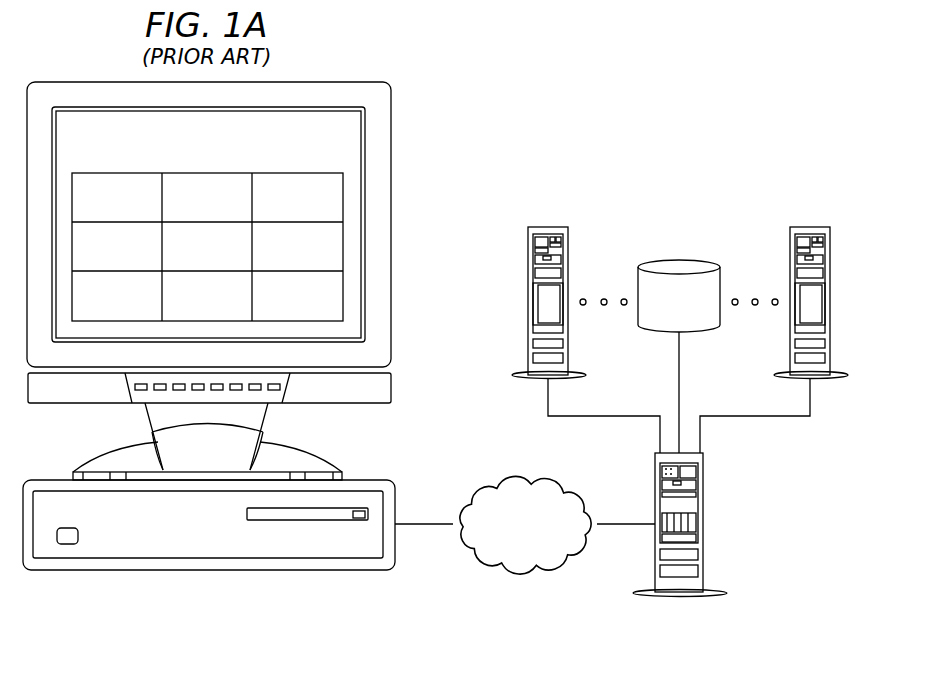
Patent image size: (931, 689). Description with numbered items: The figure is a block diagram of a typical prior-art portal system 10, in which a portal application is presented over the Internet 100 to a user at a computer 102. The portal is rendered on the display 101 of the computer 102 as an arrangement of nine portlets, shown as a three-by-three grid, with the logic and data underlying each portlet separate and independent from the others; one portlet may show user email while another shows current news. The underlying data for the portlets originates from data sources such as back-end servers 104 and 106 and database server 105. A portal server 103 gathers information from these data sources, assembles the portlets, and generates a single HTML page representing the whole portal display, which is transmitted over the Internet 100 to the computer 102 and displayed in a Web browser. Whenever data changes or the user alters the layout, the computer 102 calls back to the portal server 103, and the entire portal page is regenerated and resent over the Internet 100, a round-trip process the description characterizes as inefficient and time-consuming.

The portal system 10 is at (650, 131).
The Internet 100 is at (553, 573).
The display 101 is at (185, 172).
The computer 102 is at (97, 84).
The portal server 103 is at (705, 503).
The back-end server 104 is at (556, 225).
The database server 105 is at (661, 313).
The back-end server 106 is at (820, 225).